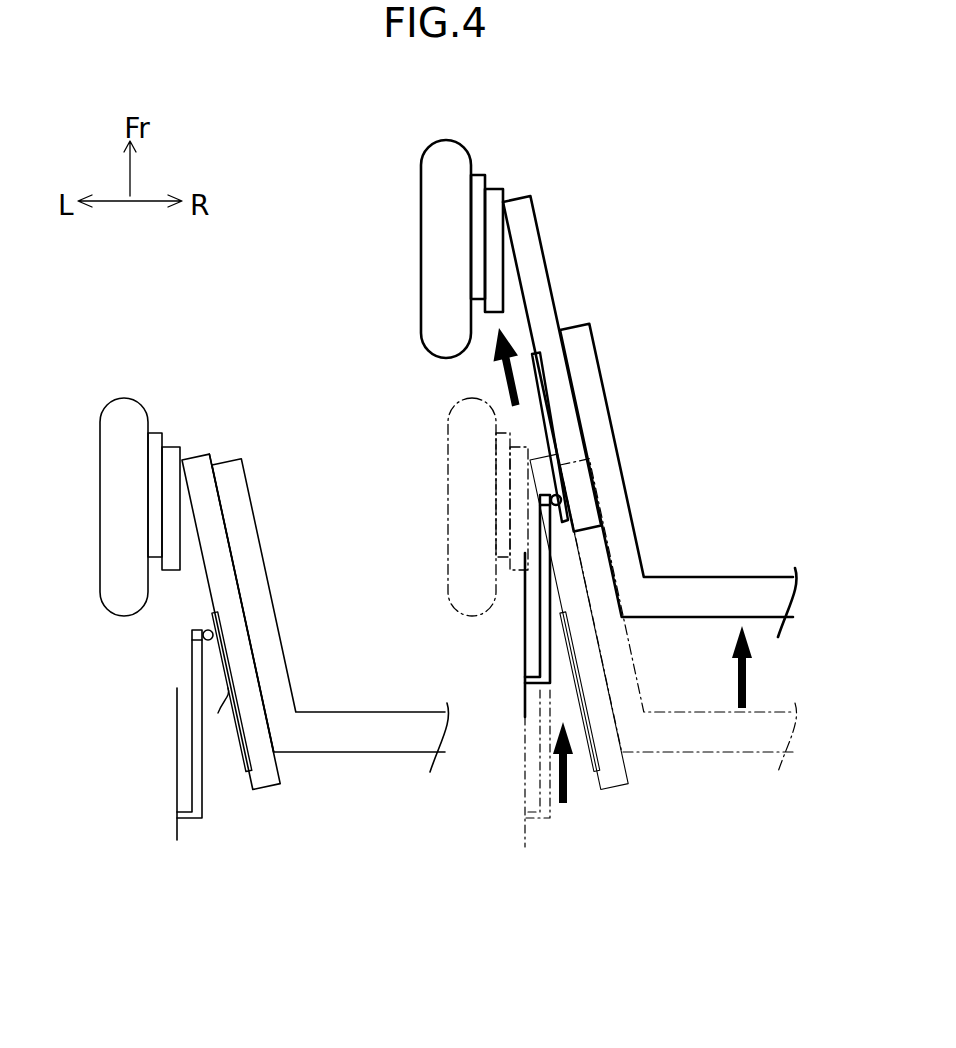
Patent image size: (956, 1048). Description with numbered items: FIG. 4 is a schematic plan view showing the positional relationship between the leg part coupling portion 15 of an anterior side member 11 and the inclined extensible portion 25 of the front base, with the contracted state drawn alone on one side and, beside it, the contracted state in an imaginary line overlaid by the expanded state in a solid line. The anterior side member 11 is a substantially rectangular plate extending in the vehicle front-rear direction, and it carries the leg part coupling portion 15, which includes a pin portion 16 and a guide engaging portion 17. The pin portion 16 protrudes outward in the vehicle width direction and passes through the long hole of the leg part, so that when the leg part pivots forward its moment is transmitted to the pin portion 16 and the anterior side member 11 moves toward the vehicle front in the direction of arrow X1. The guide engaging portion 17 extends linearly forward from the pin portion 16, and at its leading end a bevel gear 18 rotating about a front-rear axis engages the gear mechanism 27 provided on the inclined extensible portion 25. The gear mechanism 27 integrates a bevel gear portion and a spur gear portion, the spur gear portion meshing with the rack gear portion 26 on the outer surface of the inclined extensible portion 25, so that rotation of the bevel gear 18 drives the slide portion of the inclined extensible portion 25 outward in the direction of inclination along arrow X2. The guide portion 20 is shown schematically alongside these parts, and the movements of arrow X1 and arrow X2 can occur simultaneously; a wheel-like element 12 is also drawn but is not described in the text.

The anterior side member 11 is at (177, 735).
The wheel 12 is at (118, 400).
The leg part coupling portion 15 is at (209, 838).
The pin portion 16 is at (188, 820).
The guide engaging portion 17 is at (205, 783).
The bevel gear 18 is at (192, 634).
The guide portion 20 is at (275, 645).
The inclined extensible portion 25 is at (194, 462).
The rack gear portion 26 is at (218, 713).
The gear mechanism 27 is at (222, 610).
The arrow X1 is at (746, 673).
The arrow X2 is at (492, 376).